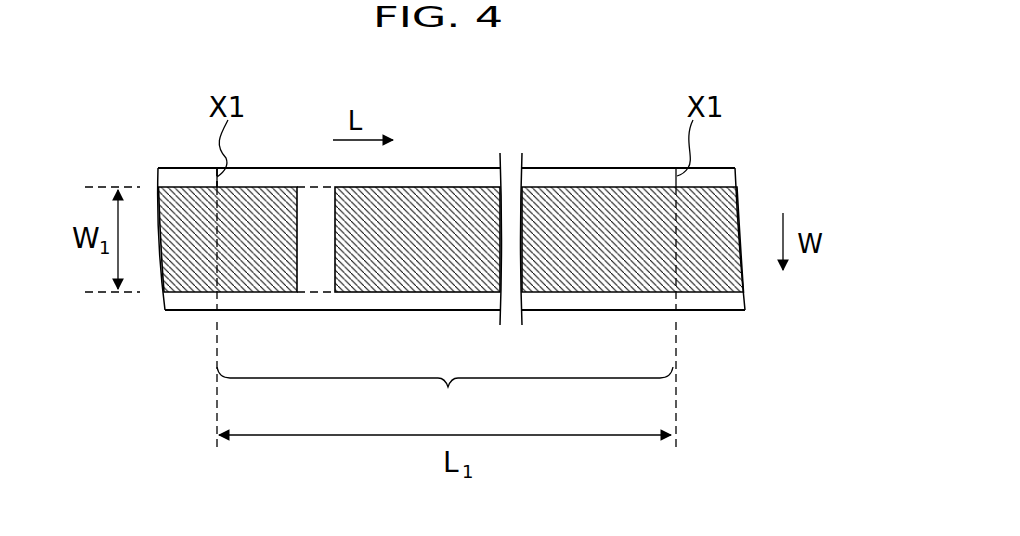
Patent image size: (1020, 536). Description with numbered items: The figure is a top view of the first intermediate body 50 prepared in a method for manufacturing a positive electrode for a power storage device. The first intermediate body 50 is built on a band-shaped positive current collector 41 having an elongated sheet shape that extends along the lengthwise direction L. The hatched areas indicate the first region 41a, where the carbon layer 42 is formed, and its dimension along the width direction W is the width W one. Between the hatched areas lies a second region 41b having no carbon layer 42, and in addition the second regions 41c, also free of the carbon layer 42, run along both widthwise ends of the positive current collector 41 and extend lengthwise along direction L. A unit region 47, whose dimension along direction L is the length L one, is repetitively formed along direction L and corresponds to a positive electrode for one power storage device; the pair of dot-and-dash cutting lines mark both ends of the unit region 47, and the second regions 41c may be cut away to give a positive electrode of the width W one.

The positive current collector 41 is at (718, 303).
The first region 41a is at (282, 265).
The second region 41b is at (313, 205).
The second regions 41c is at (458, 180).
The carbon layer 42 is at (466, 240).
The unit region 47 is at (445, 393).
The first intermediate body 50 is at (486, 269).